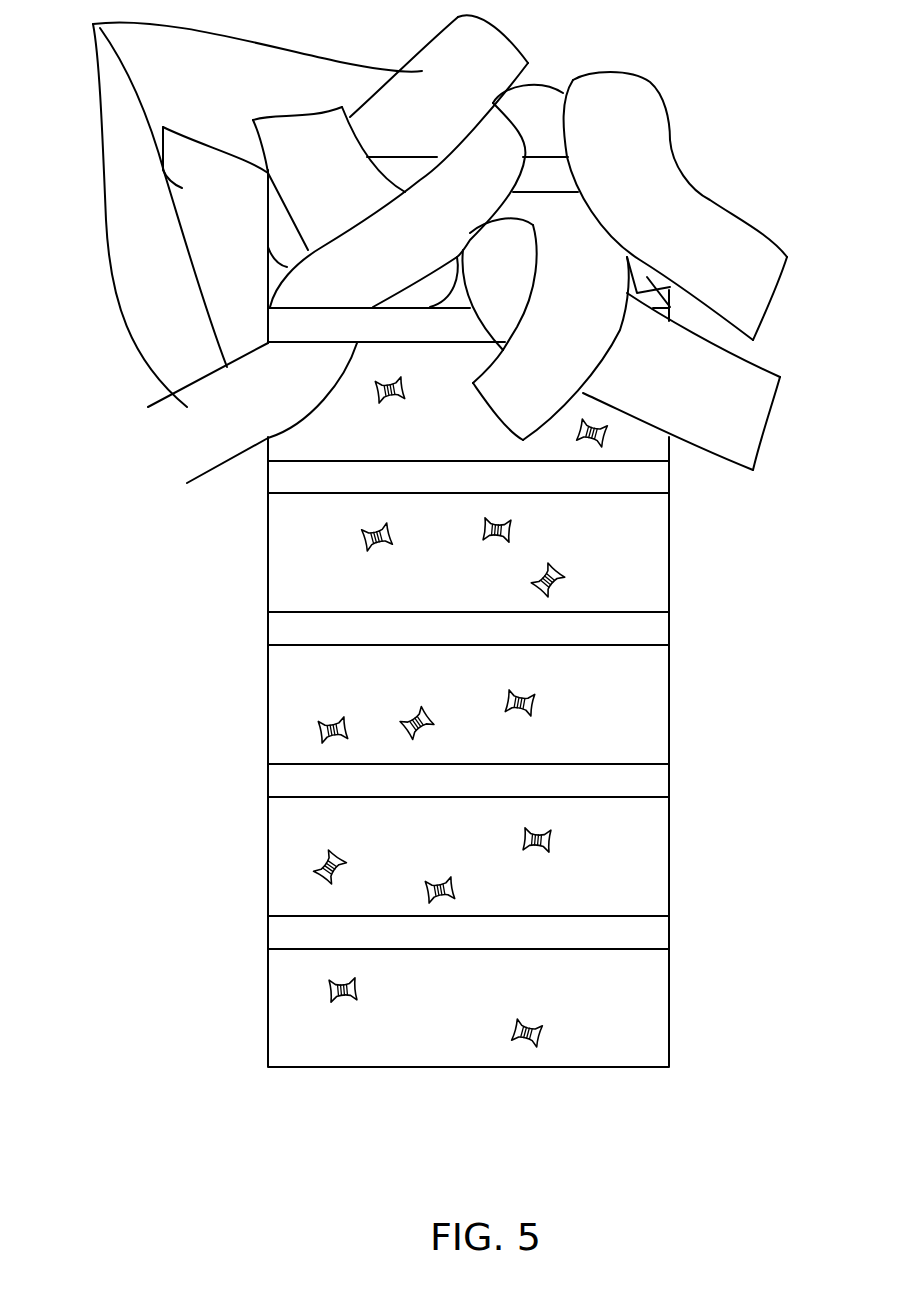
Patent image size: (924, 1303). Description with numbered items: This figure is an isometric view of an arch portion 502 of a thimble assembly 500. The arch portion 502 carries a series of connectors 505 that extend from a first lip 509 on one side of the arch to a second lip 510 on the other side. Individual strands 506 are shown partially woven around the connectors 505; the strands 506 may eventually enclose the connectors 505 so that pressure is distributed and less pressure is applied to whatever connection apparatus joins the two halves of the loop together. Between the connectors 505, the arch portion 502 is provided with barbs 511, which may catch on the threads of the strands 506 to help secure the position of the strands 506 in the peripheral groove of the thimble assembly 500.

The thimble assembly 500 is at (210, 626).
The arch portion 502 is at (657, 565).
The connectors 505 is at (470, 339).
The strands 506 is at (410, 246).
The first lip 509 is at (660, 857).
The second lip 510 is at (268, 857).
The barbs 511 is at (537, 572).